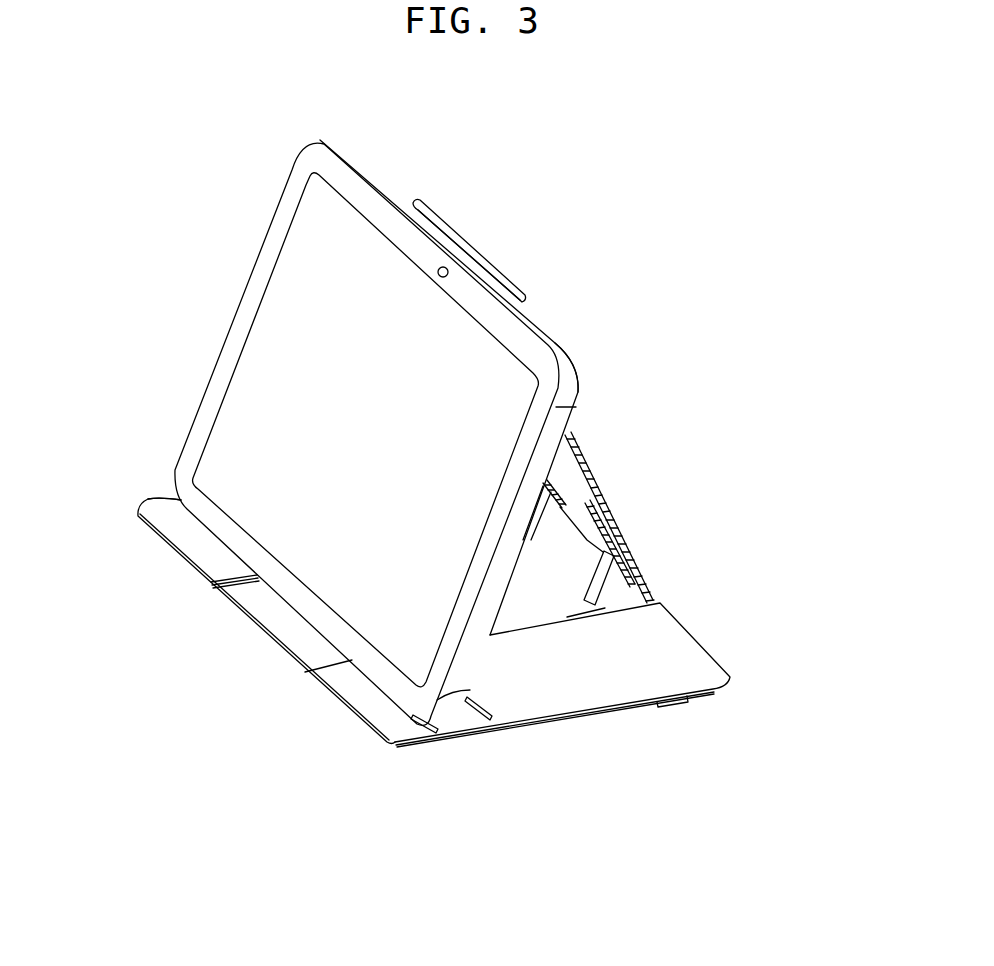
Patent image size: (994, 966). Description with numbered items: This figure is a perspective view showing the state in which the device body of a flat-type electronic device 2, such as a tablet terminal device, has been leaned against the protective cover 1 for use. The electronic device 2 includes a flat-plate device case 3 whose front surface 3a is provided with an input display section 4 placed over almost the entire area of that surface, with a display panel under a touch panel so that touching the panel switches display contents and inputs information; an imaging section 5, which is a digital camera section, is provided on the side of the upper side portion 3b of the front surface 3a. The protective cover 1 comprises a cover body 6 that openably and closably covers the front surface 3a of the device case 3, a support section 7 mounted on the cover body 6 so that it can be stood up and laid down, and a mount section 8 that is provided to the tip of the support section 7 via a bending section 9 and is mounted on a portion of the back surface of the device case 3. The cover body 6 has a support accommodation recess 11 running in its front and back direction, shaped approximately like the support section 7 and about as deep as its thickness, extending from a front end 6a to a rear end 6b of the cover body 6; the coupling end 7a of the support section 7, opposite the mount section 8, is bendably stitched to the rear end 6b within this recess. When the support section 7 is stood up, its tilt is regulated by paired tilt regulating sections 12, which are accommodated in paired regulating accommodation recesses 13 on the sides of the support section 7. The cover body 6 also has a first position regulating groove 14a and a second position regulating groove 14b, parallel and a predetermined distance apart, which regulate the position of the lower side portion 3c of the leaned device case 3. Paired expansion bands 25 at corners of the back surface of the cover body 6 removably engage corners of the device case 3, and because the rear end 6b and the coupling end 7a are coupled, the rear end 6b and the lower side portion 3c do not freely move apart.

The protective cover 1 is at (714, 645).
The electronic device 2 is at (216, 334).
The device case 3 is at (258, 265).
The front surface 3a is at (210, 519).
The upper side portion 3b is at (537, 332).
The lower side portion 3c is at (303, 624).
The input display section 4 is at (330, 230).
The imaging section 5 is at (447, 266).
The cover body 6 is at (579, 703).
The front end 6a is at (347, 718).
The rear end 6b is at (672, 612).
The support section 7 is at (578, 437).
The coupling end 7a is at (586, 558).
The mount section 8 is at (440, 217).
The bending section 9 is at (493, 268).
The support accommodation recess 11 is at (260, 607).
The tilt regulating sections 12 is at (552, 485).
The regulating accommodation recesses 13 is at (555, 496).
The first position regulating groove 14a is at (413, 733).
The second position regulating groove 14b is at (467, 727).
The expansion bands 25 is at (684, 706).